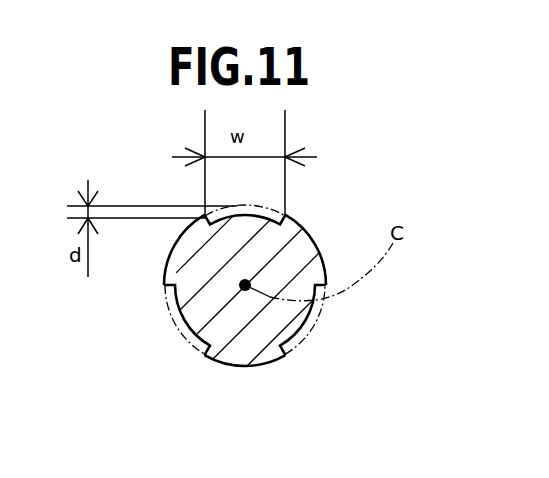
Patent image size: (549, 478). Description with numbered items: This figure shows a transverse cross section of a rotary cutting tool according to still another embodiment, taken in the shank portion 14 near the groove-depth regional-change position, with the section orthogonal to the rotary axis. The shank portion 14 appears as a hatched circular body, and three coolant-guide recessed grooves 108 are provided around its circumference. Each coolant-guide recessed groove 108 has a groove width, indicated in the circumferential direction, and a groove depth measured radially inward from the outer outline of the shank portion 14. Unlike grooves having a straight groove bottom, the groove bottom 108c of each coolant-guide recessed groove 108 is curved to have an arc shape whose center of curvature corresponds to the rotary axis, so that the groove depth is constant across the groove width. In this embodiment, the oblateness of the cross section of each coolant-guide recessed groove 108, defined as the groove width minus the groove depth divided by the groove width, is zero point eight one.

The shank portion 14 is at (245, 352).
The coolant-guide recessed grooves 108 is at (327, 350).
The groove bottom 108c is at (192, 330).